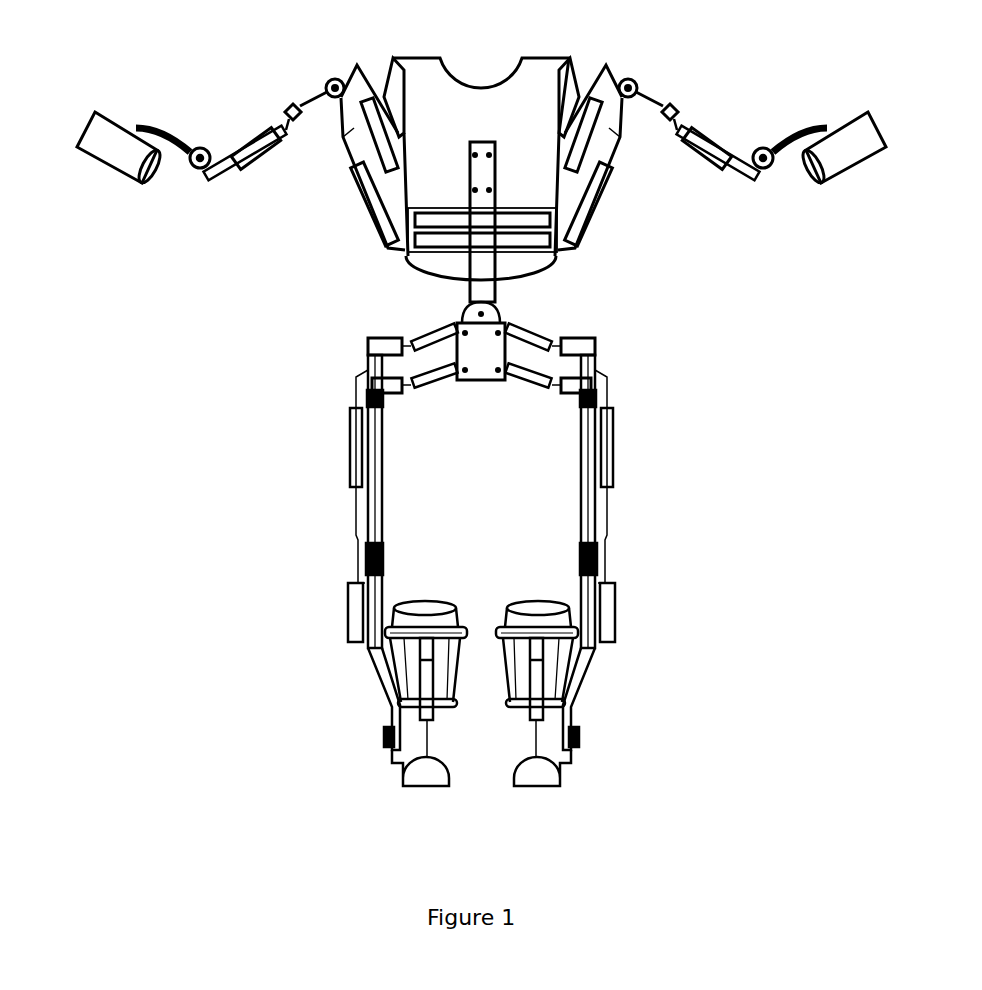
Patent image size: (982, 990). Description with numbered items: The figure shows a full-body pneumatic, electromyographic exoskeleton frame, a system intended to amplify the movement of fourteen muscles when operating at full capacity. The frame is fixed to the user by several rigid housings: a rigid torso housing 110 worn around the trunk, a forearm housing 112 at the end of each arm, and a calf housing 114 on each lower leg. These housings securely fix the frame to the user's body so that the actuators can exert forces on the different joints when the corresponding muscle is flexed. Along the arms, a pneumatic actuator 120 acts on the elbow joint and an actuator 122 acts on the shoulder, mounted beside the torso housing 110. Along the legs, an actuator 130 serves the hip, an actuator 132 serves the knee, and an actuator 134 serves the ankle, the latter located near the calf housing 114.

The rigid torso housing 110 is at (530, 70).
The forearm housing 112 is at (92, 145).
The calf housing 114 is at (411, 622).
The pneumatic actuator for the elbow joint 120 is at (252, 157).
The actuator for the shoulder 122 is at (371, 105).
The actuator for the hip 130 is at (353, 428).
The actuator for the knee 132 is at (351, 612).
The actuator for the ankle 134 is at (427, 702).